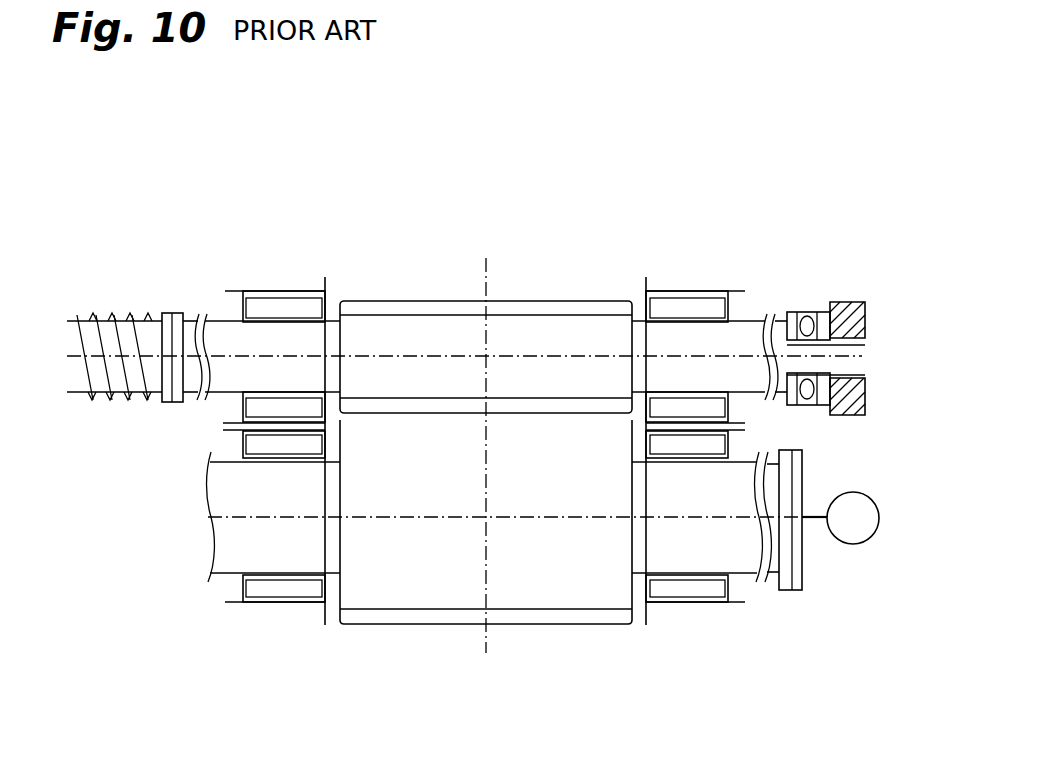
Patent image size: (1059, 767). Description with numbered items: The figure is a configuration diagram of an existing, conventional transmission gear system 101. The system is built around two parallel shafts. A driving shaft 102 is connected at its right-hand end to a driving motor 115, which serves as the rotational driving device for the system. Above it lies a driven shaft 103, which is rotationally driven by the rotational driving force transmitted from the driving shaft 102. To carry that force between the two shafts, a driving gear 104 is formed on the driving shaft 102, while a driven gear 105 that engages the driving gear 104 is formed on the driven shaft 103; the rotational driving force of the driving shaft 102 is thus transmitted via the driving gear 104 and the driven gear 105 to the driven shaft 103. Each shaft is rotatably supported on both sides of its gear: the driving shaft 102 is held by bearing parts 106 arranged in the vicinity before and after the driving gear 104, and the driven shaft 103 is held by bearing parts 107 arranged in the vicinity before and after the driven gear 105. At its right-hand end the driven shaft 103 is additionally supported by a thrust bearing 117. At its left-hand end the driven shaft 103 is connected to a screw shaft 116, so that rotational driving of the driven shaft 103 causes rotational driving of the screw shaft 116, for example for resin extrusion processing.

The transmission gear system 101 is at (727, 138).
The driving shaft 102 is at (238, 557).
The driven shaft 103 is at (240, 338).
The driving gear 104 is at (413, 625).
The driven gear 105 is at (557, 300).
The bearing parts 106 is at (283, 588).
The bearing parts 107 is at (283, 305).
The driving motor 115 is at (853, 547).
The screw shaft 116 is at (100, 316).
The thrust bearing 117 is at (787, 312).